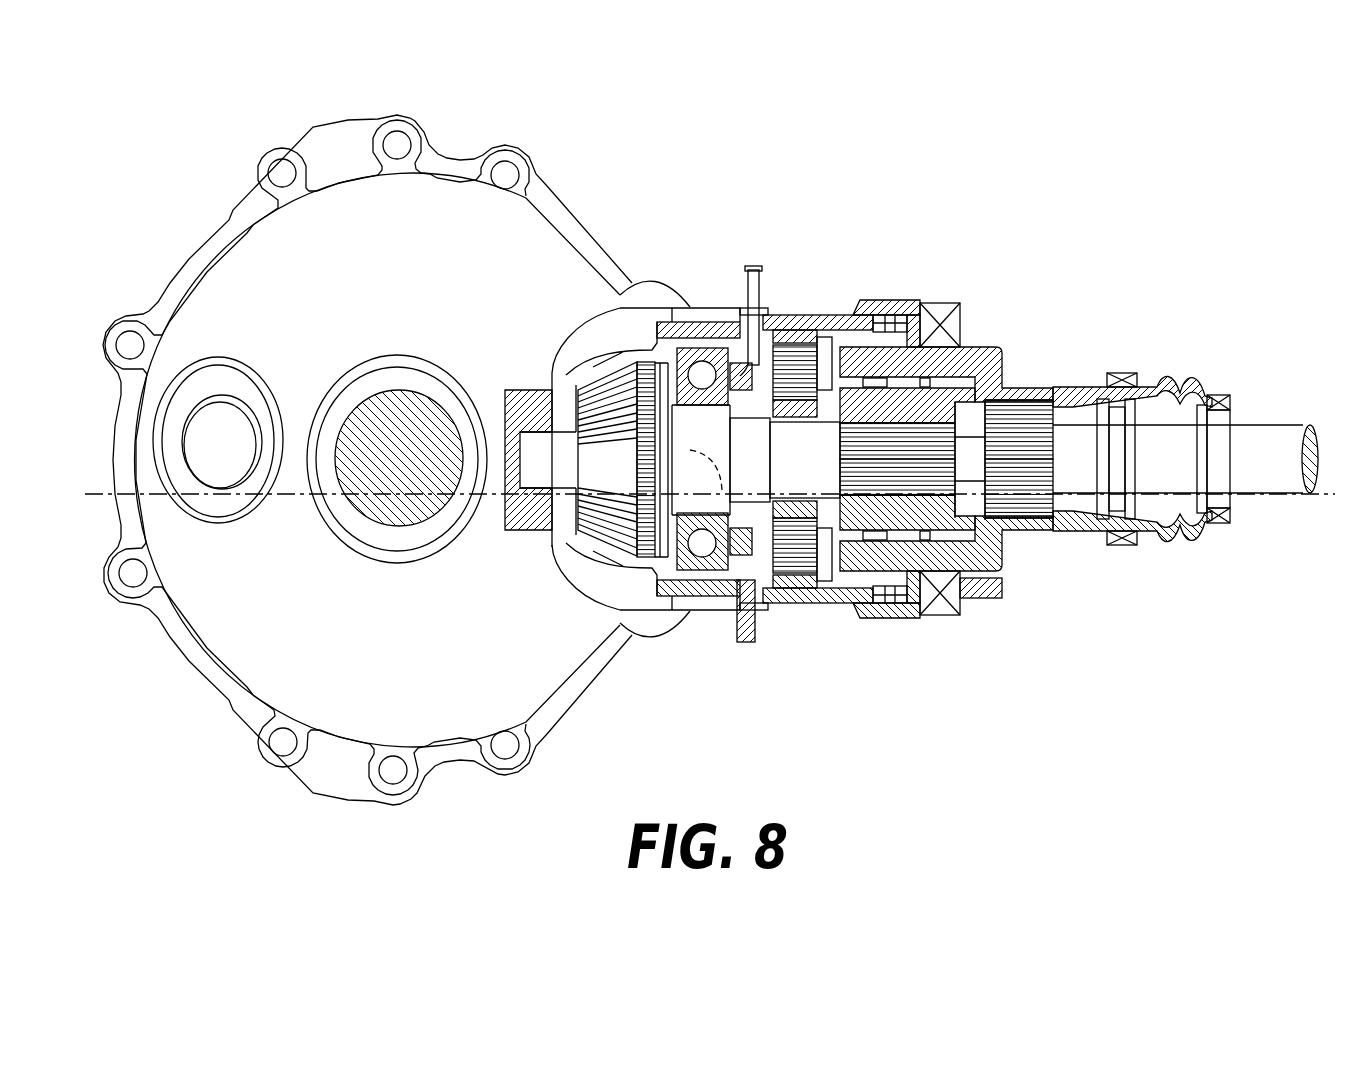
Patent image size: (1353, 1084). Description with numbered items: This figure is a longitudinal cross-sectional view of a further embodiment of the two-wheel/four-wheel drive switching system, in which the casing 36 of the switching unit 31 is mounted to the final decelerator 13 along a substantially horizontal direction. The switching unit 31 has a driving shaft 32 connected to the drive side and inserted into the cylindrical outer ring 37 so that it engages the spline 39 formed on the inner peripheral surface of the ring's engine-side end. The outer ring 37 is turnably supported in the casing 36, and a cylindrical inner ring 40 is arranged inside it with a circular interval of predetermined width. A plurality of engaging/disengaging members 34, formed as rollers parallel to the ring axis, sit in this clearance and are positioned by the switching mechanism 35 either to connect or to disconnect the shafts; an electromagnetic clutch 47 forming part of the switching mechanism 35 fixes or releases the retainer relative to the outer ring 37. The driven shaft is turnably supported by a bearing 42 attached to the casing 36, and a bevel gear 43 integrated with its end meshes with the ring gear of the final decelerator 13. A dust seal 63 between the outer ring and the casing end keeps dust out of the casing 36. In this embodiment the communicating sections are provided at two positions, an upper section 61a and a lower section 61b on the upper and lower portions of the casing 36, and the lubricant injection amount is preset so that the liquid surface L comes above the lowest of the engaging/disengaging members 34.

The final reduction gear 13 is at (448, 195).
The switching unit 31 is at (810, 303).
The driving shaft 32 is at (1287, 440).
The engaging/disengaging members 34 is at (955, 353).
The switching mechanism 35 is at (600, 604).
The casing 36 is at (872, 310).
The outer ring 37 is at (1005, 355).
The spline 39 is at (1058, 387).
The inner ring 40 is at (895, 380).
The bearing 42 is at (695, 360).
The bevel gear 43 is at (553, 547).
The electromagnetic clutch 47 is at (797, 565).
The upper communicating section 61a is at (712, 325).
The lower communicating section 61b is at (725, 608).
The dust seal 63 is at (985, 592).